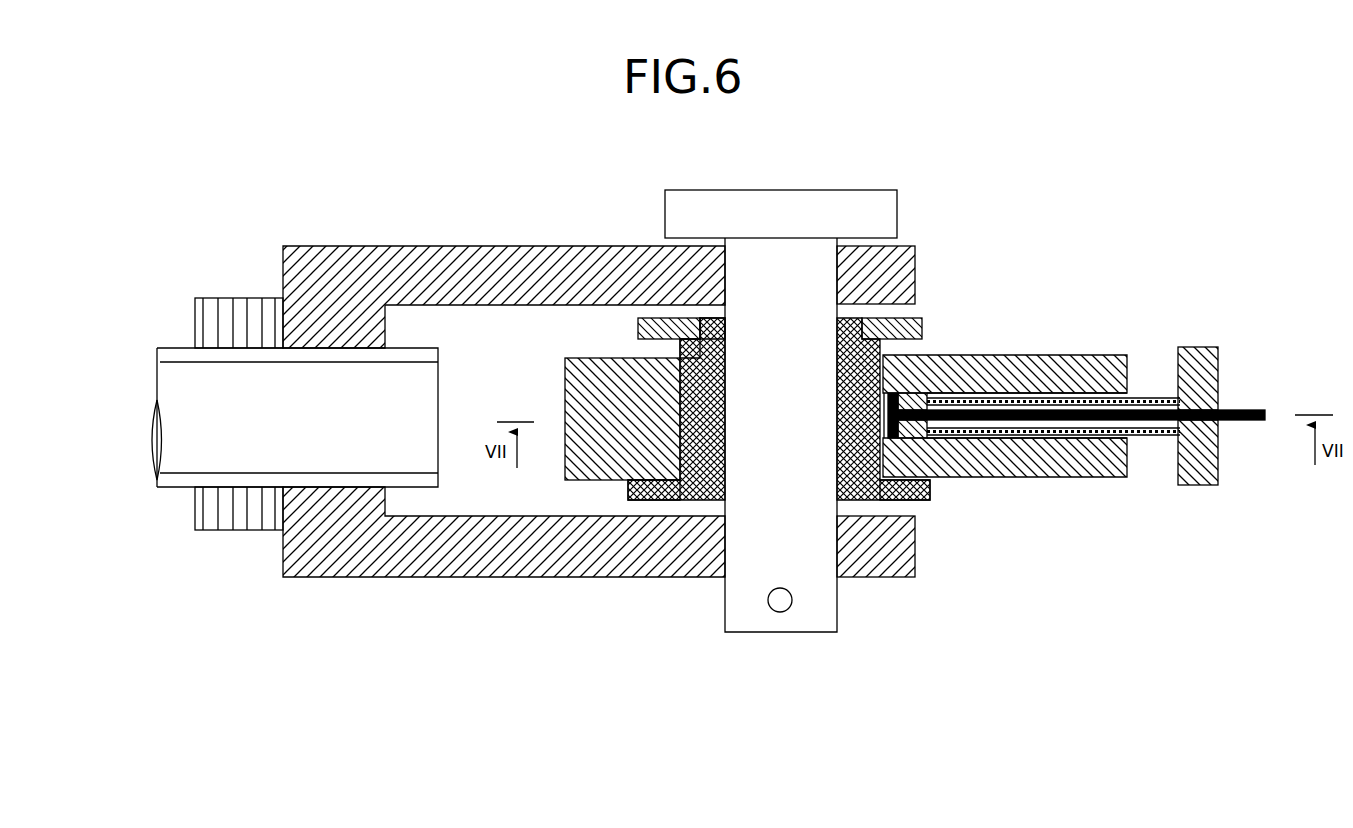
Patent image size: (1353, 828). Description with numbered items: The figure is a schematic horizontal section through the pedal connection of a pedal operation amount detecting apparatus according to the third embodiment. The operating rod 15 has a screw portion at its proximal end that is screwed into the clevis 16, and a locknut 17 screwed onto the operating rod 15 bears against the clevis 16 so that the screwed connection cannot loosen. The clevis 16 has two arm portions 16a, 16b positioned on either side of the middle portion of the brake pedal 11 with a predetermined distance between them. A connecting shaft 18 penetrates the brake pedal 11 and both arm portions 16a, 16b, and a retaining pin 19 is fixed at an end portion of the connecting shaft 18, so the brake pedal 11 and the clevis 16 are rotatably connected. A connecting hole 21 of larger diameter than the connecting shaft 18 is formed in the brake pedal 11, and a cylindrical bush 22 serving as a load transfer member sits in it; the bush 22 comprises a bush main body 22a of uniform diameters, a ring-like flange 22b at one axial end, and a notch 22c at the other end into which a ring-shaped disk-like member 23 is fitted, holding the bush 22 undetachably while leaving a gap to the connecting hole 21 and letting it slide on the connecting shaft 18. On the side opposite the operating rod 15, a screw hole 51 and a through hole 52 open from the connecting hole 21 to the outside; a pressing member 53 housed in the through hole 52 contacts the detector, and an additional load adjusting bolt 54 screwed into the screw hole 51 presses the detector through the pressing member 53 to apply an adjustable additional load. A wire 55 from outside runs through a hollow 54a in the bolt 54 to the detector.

The brake pedal 11 is at (1083, 356).
The operating rod 15 is at (178, 387).
The clevis 16 is at (356, 562).
The arm portion 16a is at (903, 260).
The arm portion 16b is at (901, 560).
The locknut 17 is at (215, 311).
The connecting shaft 18 is at (833, 208).
The retaining pin 19 is at (781, 605).
The connecting hole 21 is at (693, 455).
The bush 22 is at (863, 503).
The bush main body 22a is at (690, 357).
The flange 22b is at (628, 490).
The notch 22c is at (705, 333).
The disk-like member 23 is at (652, 330).
The screw hole 51 is at (1068, 437).
The through hole 52 is at (910, 436).
The pressing member 53 is at (913, 398).
The additional load adjusting bolt 54 is at (1198, 356).
The hollow 54a is at (1153, 430).
The wire 55 is at (1243, 422).